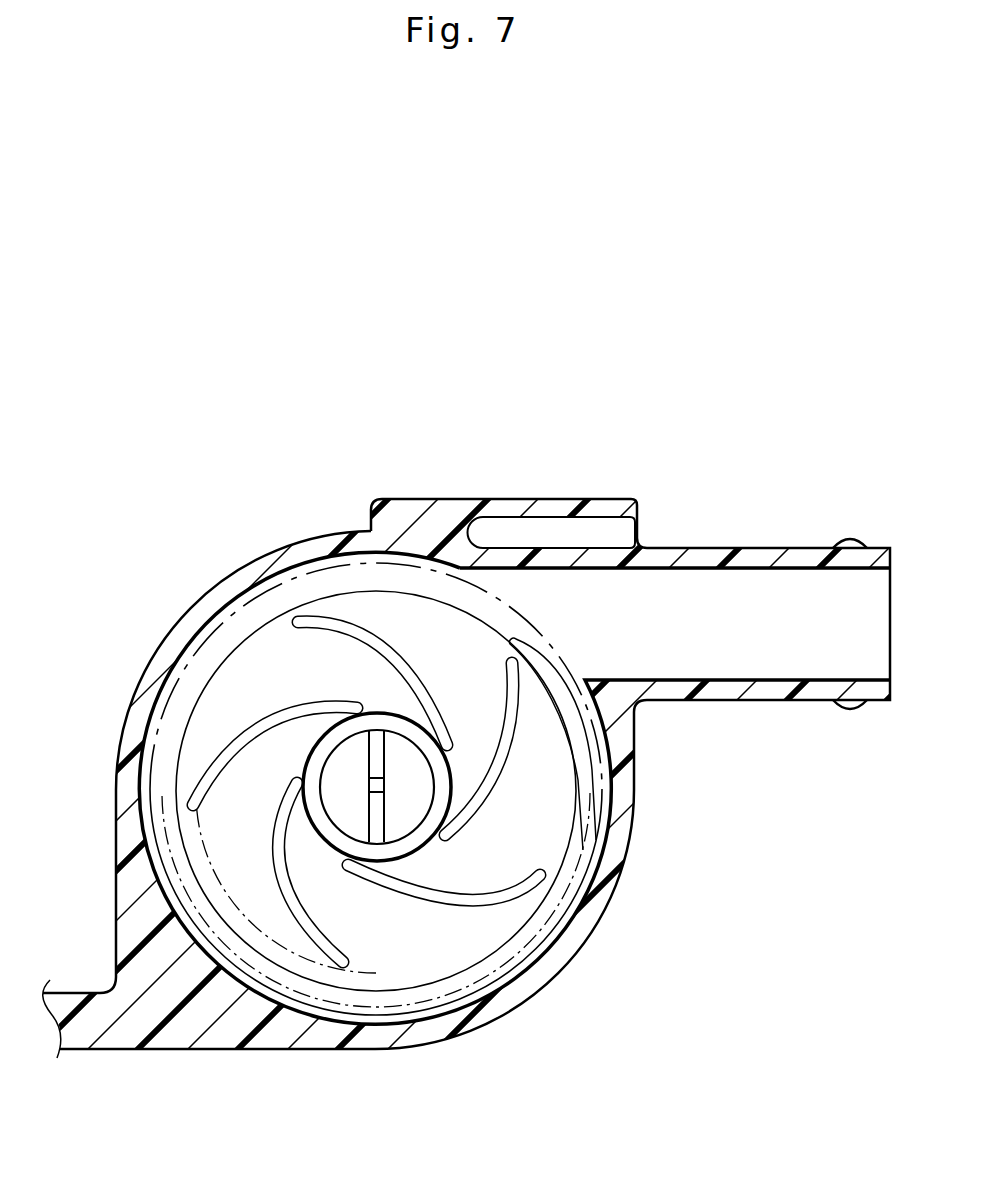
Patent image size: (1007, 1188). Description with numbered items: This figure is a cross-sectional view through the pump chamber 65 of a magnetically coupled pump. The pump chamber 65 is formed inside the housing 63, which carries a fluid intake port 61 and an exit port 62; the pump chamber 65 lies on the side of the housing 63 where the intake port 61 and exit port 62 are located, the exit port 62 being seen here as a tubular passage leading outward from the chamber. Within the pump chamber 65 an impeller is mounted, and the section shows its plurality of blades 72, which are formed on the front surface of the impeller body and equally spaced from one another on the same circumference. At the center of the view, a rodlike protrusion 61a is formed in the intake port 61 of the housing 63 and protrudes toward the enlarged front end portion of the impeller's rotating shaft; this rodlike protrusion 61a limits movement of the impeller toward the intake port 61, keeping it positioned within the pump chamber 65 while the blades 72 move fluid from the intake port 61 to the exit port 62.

The fluid intake port 61 is at (415, 789).
The rodlike protrusion 61a is at (368, 780).
The exit port 62 is at (770, 690).
The housing 63 is at (410, 1047).
The pump chamber 65 is at (457, 940).
The blades 72 is at (263, 712).